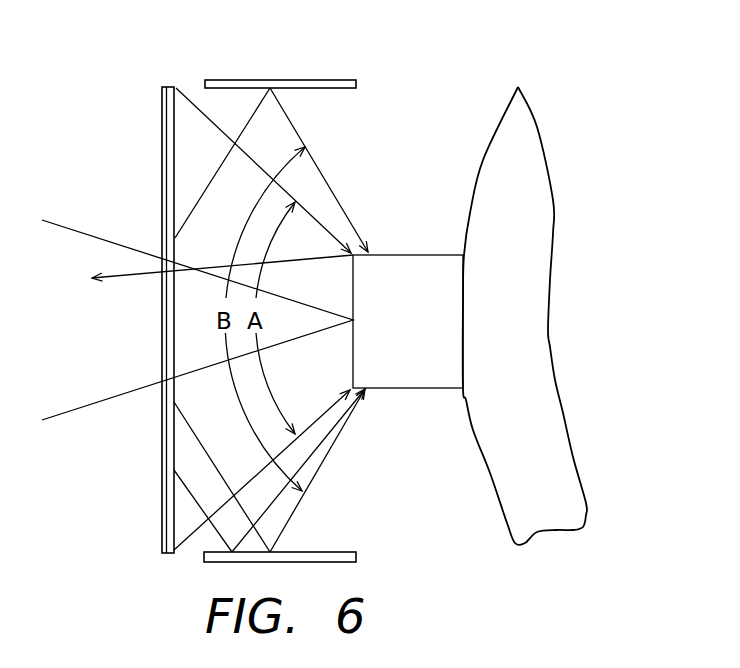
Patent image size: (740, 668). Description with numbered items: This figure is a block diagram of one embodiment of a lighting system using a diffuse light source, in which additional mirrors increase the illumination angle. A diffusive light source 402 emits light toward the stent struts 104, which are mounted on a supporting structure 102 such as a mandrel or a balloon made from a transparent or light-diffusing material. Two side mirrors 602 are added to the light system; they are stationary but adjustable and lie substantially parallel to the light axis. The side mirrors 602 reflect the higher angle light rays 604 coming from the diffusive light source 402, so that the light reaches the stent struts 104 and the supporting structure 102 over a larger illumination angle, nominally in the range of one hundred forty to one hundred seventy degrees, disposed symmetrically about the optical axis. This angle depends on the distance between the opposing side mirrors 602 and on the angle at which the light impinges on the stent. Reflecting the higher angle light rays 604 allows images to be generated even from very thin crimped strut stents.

The supporting structure 102 is at (533, 124).
The stent struts 104 is at (428, 329).
The diffusive light source 402 is at (162, 86).
The side mirrors 602 is at (315, 80).
The higher angle light rays 604 is at (210, 178).